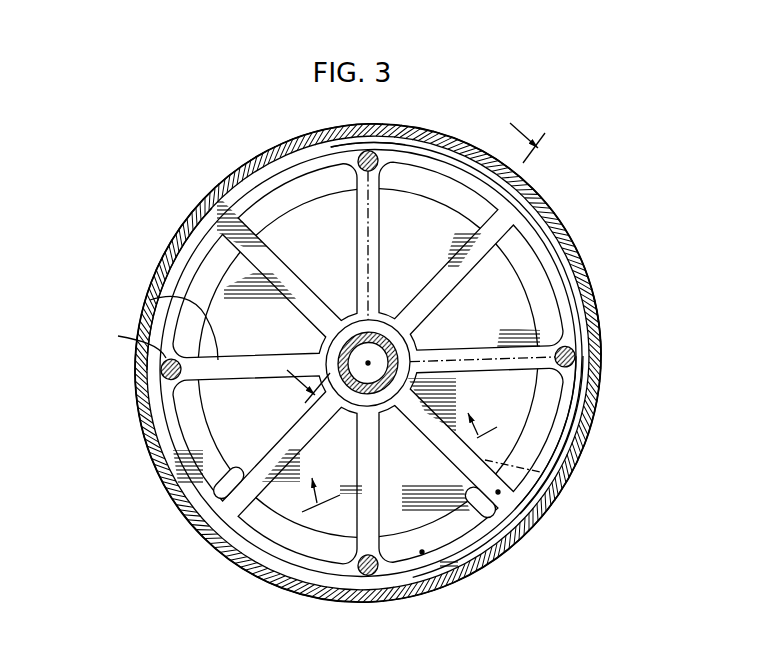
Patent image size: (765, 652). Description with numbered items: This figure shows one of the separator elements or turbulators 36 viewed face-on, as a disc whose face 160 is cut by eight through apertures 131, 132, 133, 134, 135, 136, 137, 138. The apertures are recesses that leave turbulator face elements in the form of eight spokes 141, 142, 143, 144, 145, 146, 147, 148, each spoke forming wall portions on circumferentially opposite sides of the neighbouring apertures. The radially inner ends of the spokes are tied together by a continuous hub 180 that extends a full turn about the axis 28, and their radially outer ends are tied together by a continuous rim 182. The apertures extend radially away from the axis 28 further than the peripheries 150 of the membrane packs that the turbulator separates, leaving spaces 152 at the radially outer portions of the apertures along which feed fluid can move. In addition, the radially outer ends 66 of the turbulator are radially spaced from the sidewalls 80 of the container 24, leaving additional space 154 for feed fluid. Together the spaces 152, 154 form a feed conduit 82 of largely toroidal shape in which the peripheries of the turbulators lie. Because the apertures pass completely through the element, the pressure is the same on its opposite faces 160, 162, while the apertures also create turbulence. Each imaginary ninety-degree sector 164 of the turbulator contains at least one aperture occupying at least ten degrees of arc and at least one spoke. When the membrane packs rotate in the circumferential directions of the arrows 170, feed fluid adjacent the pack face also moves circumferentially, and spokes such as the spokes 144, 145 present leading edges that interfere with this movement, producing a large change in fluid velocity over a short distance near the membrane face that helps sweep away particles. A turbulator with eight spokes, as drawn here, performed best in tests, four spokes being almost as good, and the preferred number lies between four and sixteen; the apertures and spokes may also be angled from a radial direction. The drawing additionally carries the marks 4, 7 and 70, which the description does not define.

The container 24 is at (186, 171).
The axis 28 is at (368, 363).
The turbulator 36 is at (159, 433).
The radially outer ends 66 is at (160, 264).
The sealing surface 70 is at (134, 351).
The sidewalls 80 is at (173, 233).
The feed conduit 82 is at (288, 185).
The through aperture 131 is at (385, 244).
The through aperture 132 is at (453, 319).
The through aperture 133 is at (450, 404).
The through aperture 134 is at (385, 479).
The through aperture 135 is at (300, 473).
The through aperture 136 is at (215, 419).
The through aperture 137 is at (220, 331).
The through aperture 138 is at (280, 244).
The spoke 141 is at (402, 185).
The spoke 142 is at (490, 280).
The spoke 143 is at (590, 372).
The spoke 144 is at (488, 503).
The spoke 145 is at (348, 516).
The spoke 146 is at (232, 498).
The spoke 147 is at (150, 300).
The spoke 148 is at (268, 235).
The peripheries of the membrane packs 150 is at (560, 440).
The spaces 152 is at (422, 552).
The additional space 154 is at (432, 566).
The face 160 is at (498, 492).
The opposite face 162 is at (556, 478).
The imaginary 90° sector 164 is at (367, 138).
The arrows 170 is at (641, 357).
The continuous hub 180 is at (385, 322).
The continuous rim 182 is at (565, 245).
The section line 4- 4 is at (415, 258).
The section line 7- 7 is at (416, 459).